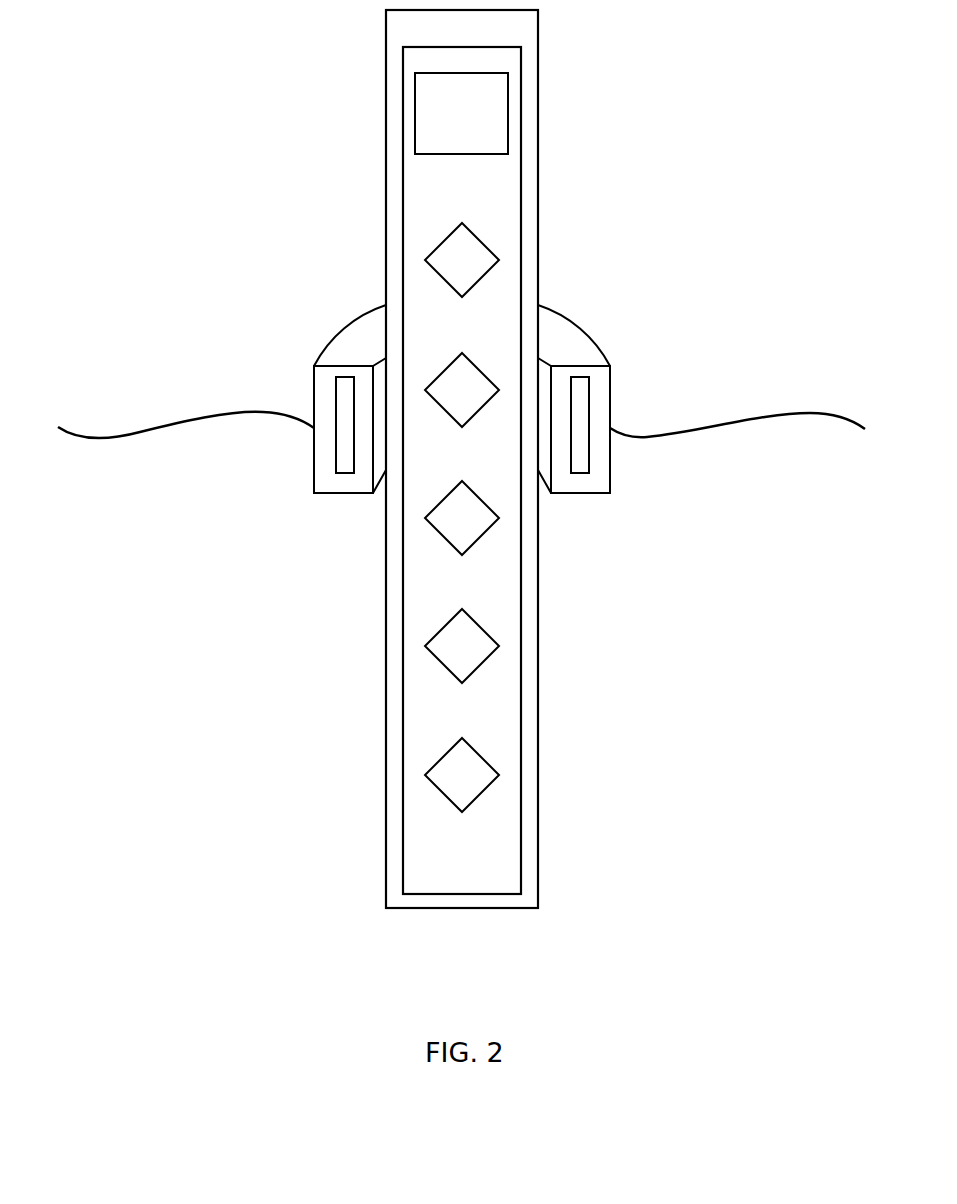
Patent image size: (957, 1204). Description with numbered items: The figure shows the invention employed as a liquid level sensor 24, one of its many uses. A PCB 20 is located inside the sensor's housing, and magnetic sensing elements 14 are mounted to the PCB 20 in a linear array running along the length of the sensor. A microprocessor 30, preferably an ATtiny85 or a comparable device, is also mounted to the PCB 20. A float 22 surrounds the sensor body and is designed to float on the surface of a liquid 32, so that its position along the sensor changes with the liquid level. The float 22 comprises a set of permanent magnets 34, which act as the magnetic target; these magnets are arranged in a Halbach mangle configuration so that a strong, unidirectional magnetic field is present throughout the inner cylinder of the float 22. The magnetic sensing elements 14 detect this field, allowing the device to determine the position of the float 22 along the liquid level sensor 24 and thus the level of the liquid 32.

The magnetic sensing elements 14 is at (447, 238).
The PCB 20 is at (403, 701).
The float 22 is at (340, 332).
The liquid level sensor 24 is at (684, 191).
The microprocessor 30 is at (416, 123).
The liquid 32 is at (792, 413).
The set of permanent magnets 34 is at (336, 412).